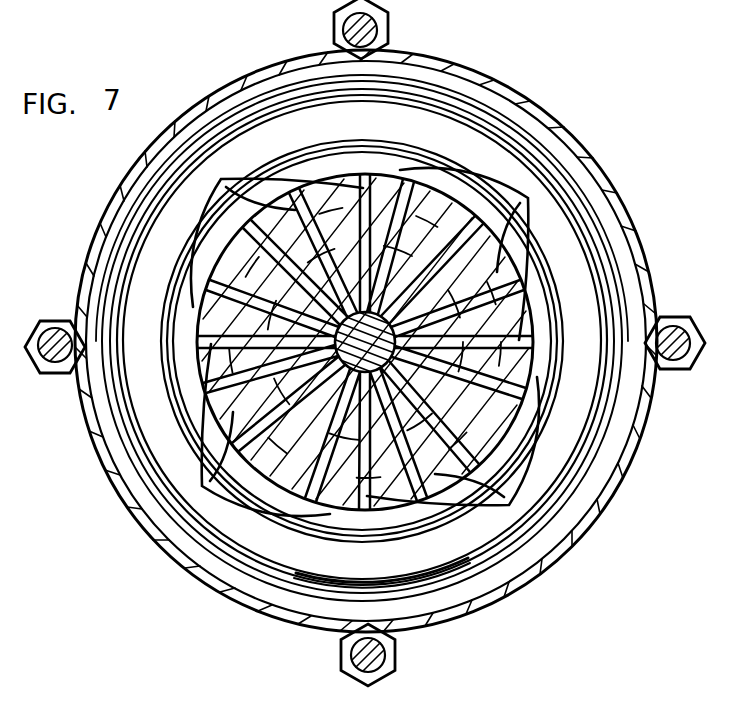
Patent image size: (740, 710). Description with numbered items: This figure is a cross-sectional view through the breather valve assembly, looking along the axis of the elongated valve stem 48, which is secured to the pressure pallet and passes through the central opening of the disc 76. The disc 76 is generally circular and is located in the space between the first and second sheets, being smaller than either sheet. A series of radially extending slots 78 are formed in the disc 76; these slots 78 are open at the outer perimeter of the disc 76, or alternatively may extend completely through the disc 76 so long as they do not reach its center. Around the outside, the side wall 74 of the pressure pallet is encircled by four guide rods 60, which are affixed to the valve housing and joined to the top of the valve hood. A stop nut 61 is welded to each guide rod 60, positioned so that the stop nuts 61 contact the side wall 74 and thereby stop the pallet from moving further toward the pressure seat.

The valve stem 48 is at (500, 385).
The guide rods 60 is at (352, 33).
The stop nuts 61 is at (389, 31).
The side wall 74 is at (117, 208).
The disc 76 is at (428, 148).
The radially extending slots 78 is at (335, 178).